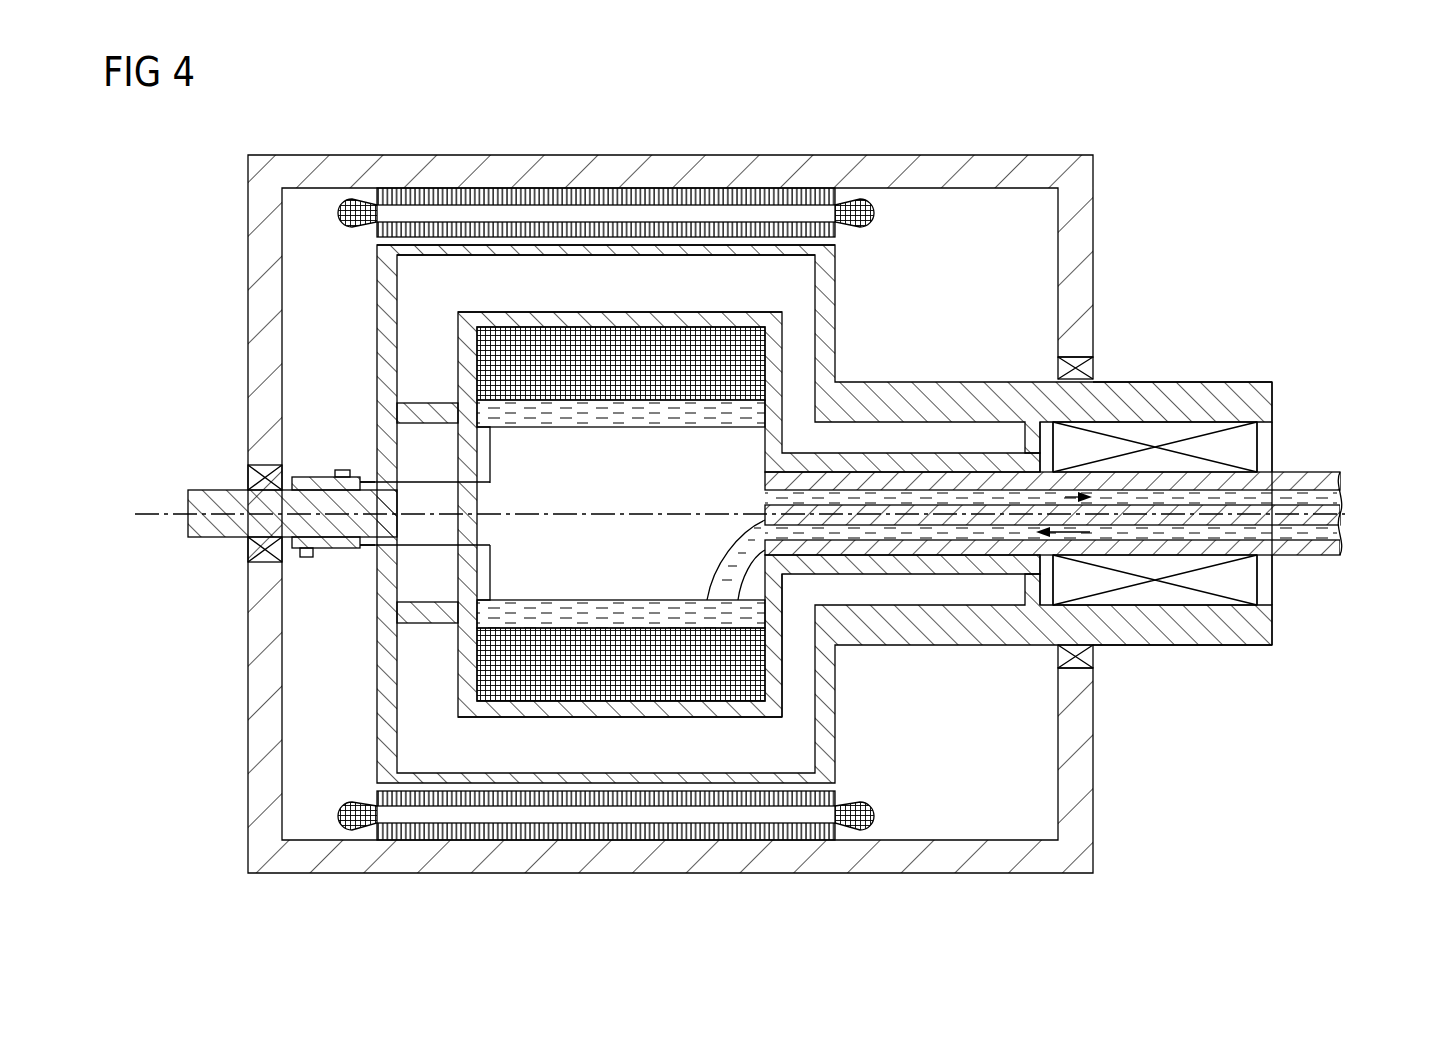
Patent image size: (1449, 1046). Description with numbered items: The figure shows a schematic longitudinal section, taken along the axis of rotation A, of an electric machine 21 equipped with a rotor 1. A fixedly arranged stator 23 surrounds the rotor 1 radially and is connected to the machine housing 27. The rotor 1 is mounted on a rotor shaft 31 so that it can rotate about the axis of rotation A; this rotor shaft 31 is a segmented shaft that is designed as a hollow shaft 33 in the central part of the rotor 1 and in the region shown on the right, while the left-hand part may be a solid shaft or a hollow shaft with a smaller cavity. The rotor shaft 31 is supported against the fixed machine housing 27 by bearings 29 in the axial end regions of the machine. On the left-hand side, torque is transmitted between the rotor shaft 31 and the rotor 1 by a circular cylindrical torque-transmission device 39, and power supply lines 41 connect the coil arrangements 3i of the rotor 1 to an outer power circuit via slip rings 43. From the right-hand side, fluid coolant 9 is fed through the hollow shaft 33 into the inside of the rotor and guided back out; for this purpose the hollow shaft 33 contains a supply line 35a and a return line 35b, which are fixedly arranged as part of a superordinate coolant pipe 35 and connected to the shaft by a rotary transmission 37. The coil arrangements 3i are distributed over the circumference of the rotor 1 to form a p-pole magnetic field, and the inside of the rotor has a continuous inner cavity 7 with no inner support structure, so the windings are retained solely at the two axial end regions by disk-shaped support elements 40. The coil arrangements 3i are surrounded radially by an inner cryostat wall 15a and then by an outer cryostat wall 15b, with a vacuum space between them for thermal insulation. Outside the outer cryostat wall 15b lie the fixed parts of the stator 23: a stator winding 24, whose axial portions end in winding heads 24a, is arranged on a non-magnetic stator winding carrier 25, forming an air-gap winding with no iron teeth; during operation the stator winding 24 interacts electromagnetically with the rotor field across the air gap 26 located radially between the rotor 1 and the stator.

The rotor 1 is at (797, 336).
The coil arrangements 3i is at (639, 393).
The inner cavity 7 is at (560, 488).
The fluid coolant 9 is at (630, 603).
The inner cryostat wall 15a is at (590, 320).
The outer cryostat wall 15b is at (768, 250).
The electric machine 21 is at (1253, 217).
The stator 23 is at (492, 178).
The stator winding 24 is at (628, 220).
The winding heads 24a is at (352, 200).
The stator winding carrier 25 is at (688, 248).
The air gap 26 is at (836, 785).
The machine housing 27 is at (979, 168).
The bearings 29 is at (1098, 372).
The rotor shaft 31 is at (218, 490).
The hollow shaft 33 is at (1235, 390).
The coolant pipe 35 is at (1306, 455).
The supply line 35a is at (1342, 530).
The return line 35b is at (1342, 497).
The rotary transmission 37 is at (1240, 578).
The torque-transmission device 39 is at (425, 626).
The support elements 40 is at (777, 680).
The power supply lines 41 is at (424, 481).
The slip rings 43 is at (323, 452).
The axis of rotation A is at (152, 512).